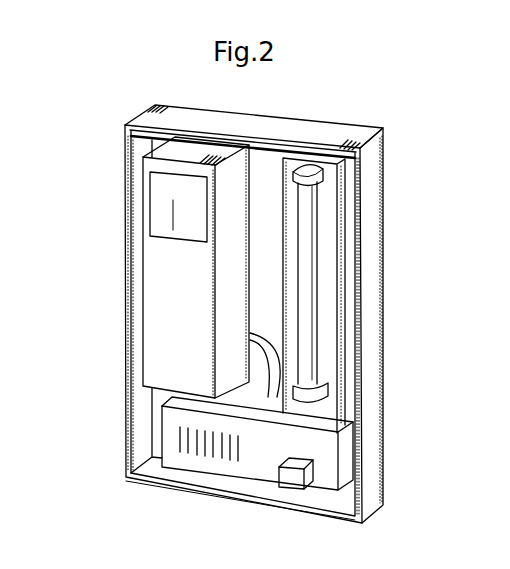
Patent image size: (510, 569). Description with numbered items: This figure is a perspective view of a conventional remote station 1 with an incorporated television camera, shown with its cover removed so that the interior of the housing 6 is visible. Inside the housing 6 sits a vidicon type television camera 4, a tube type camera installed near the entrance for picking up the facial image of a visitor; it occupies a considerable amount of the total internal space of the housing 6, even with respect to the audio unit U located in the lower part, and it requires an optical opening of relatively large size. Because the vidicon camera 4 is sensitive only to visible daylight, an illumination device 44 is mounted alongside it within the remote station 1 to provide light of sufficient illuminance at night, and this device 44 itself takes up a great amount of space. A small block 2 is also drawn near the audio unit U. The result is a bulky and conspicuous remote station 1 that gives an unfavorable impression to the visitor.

The remote station 1 is at (386, 383).
The housing 6 is at (350, 123).
The vidicon type television camera 4 is at (158, 278).
The illumination device 44 is at (310, 274).
The audio unit U is at (255, 463).
The switch block 2 is at (290, 484).